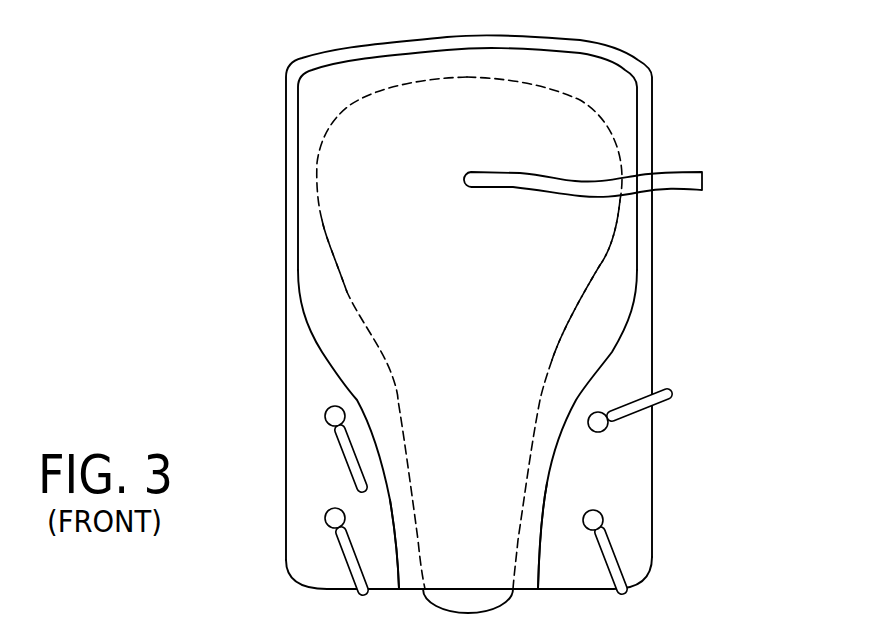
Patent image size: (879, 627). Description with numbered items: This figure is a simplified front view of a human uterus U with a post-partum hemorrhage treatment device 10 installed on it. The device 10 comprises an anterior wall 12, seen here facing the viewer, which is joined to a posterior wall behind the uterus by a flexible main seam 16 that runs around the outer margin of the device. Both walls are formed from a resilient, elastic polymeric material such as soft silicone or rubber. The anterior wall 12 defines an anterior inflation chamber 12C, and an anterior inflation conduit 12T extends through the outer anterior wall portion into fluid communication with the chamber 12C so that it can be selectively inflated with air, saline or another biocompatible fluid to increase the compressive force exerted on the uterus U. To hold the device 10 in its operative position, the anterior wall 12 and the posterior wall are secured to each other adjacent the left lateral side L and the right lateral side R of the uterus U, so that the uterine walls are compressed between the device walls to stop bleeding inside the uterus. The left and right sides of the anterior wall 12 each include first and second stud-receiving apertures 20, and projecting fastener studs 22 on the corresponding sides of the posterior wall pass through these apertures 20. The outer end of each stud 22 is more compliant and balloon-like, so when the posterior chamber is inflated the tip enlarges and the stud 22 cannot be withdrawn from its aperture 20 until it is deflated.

The post-partum hemorrhage treatment device 10 is at (288, 369).
The main seam 16 is at (336, 48).
The anterior wall 12 is at (348, 222).
The anterior inflation chamber 12C is at (540, 467).
The anterior inflation conduit 12T is at (675, 177).
The uterus U is at (572, 233).
The left lateral side L is at (602, 263).
The right lateral side R is at (347, 283).
The stud-receiving aperture 20 is at (326, 410).
The fastener stud 22 is at (347, 463).